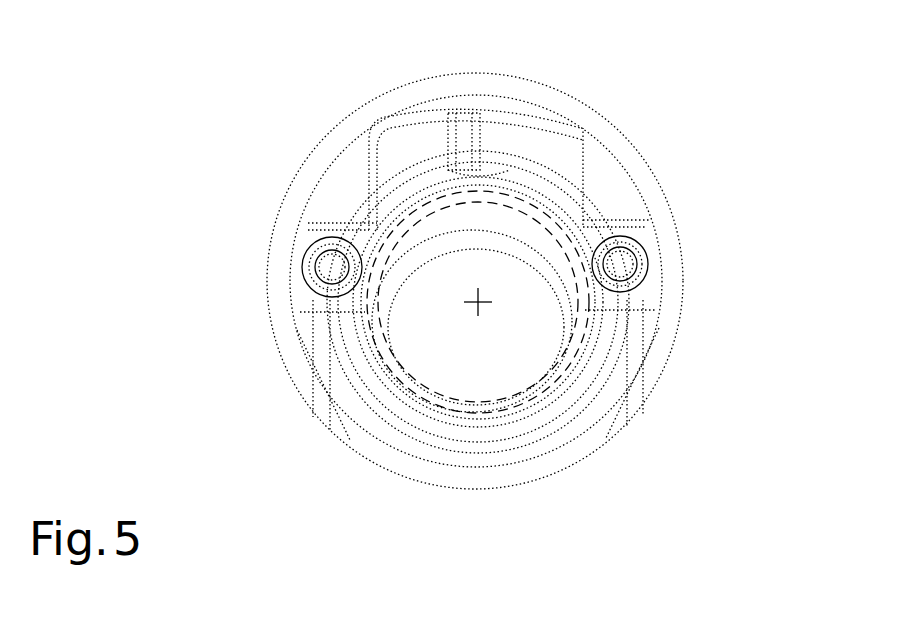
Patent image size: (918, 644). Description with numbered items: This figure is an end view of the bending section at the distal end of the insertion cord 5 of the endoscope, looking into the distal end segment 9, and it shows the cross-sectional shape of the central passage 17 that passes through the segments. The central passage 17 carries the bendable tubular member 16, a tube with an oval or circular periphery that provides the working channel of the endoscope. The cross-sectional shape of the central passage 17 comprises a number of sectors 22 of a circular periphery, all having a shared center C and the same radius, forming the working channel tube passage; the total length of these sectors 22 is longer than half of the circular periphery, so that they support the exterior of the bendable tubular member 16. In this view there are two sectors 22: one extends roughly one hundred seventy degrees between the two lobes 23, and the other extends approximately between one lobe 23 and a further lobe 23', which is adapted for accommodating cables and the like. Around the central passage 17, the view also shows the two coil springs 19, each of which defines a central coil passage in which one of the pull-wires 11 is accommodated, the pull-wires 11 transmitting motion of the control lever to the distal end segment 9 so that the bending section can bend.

The insertion cord 5 is at (641, 93).
The distal end segment 9 is at (662, 183).
The pull-wires 11 is at (330, 267).
The bendable tubular member 16 is at (435, 193).
The central passage 17 is at (519, 352).
The coil springs 19 is at (342, 293).
The sectors 22 is at (537, 193).
The lobes 23 is at (484, 279).
The further lobe 23' is at (447, 147).
The shared center C is at (478, 302).